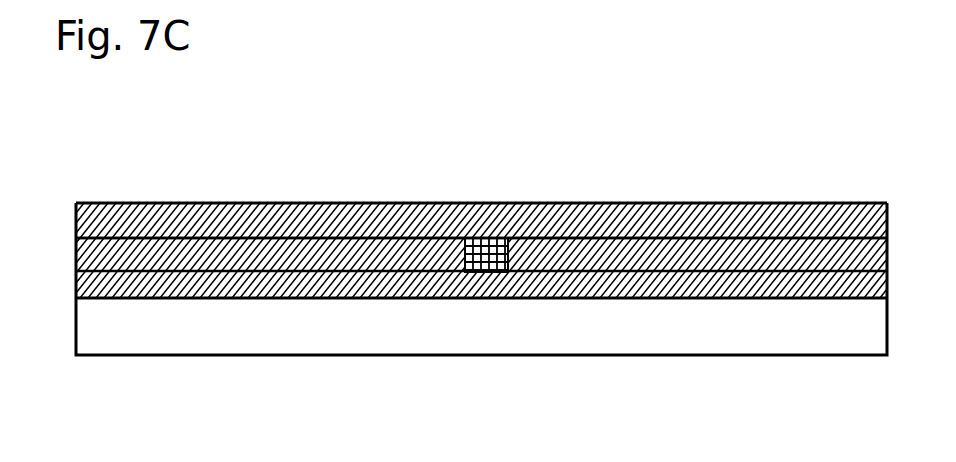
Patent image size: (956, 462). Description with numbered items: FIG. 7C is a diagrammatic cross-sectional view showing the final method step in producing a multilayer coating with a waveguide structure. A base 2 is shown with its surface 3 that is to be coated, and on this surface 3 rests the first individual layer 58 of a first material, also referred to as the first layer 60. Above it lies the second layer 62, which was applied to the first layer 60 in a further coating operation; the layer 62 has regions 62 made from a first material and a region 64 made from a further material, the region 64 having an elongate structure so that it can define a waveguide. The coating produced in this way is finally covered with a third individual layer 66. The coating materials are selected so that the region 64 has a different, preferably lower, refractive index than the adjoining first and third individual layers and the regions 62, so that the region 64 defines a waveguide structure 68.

The base 2 is at (303, 357).
The surface 3 is at (128, 297).
The first individual layer 58 is at (335, 270).
The first layer 60 is at (212, 237).
The second layer 62 is at (410, 237).
The region 64 is at (488, 240).
The third individual layer 66 is at (648, 202).
The waveguide structure 68 is at (508, 242).